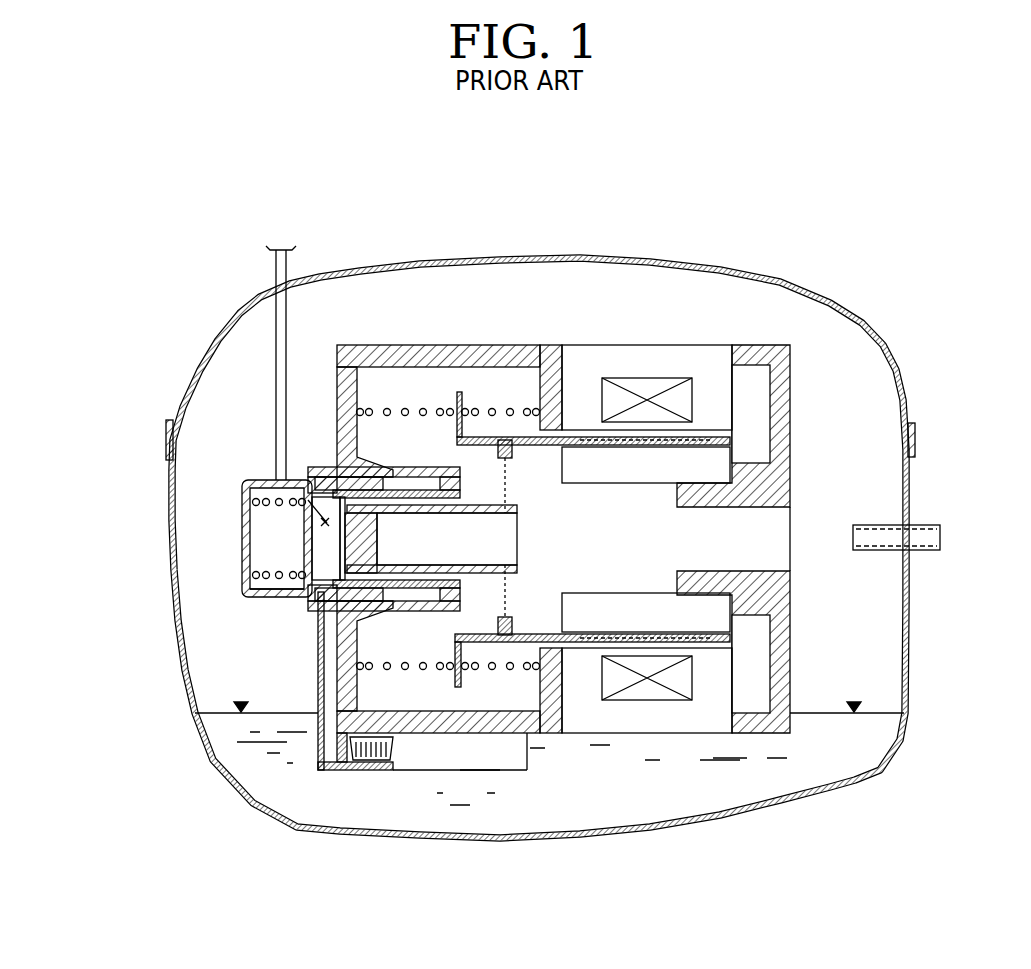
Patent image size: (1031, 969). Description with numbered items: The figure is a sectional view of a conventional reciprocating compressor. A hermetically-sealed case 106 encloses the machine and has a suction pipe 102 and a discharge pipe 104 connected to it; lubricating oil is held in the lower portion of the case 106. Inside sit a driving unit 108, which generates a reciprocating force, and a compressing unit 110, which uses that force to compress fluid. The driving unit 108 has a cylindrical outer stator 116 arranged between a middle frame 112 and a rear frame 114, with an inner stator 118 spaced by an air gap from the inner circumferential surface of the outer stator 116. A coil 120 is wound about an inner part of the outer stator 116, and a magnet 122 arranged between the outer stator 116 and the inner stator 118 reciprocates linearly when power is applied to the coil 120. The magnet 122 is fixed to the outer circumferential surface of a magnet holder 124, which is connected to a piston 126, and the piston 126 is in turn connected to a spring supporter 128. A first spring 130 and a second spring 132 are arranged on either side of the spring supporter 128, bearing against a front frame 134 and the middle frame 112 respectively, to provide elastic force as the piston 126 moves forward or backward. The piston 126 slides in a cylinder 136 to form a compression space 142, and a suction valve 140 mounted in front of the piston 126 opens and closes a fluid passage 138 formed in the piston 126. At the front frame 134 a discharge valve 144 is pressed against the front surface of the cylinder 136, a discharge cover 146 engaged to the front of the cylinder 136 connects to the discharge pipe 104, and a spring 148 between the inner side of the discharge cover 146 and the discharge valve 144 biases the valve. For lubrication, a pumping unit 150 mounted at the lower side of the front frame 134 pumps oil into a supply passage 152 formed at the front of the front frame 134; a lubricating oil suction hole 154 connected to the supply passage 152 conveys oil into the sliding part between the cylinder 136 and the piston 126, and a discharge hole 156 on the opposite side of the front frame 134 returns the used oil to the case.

The suction pipe 102 is at (928, 528).
The discharge pipe 104 is at (277, 330).
The hermetically-sealed case 106 is at (884, 334).
The driving unit 108 is at (748, 334).
The compressing unit 110 is at (385, 455).
The middle frame 112 is at (575, 345).
The rear frame 114 is at (783, 363).
The outer stator 116 is at (623, 362).
The inner stator 118 is at (652, 458).
The coil 120 is at (687, 400).
The magnet 122 is at (710, 437).
The magnet holder 124 is at (524, 437).
The piston 126 is at (312, 565).
The spring supporter 128 is at (458, 390).
The first spring 130 is at (404, 408).
The second spring 132 is at (491, 408).
The front frame 134 is at (342, 466).
The cylinder 136 is at (310, 598).
The fluid passage 138 is at (318, 484).
The suction valve 140 is at (300, 553).
The compression space 142 is at (306, 469).
The discharge valve 144 is at (312, 512).
The discharge cover 146 is at (305, 540).
The spring 148 is at (297, 498).
The pumping unit 150 is at (337, 773).
The supply passage 152 is at (328, 692).
The lubricating oil suction hole 154 is at (322, 648).
The discharge hole 156 is at (342, 466).